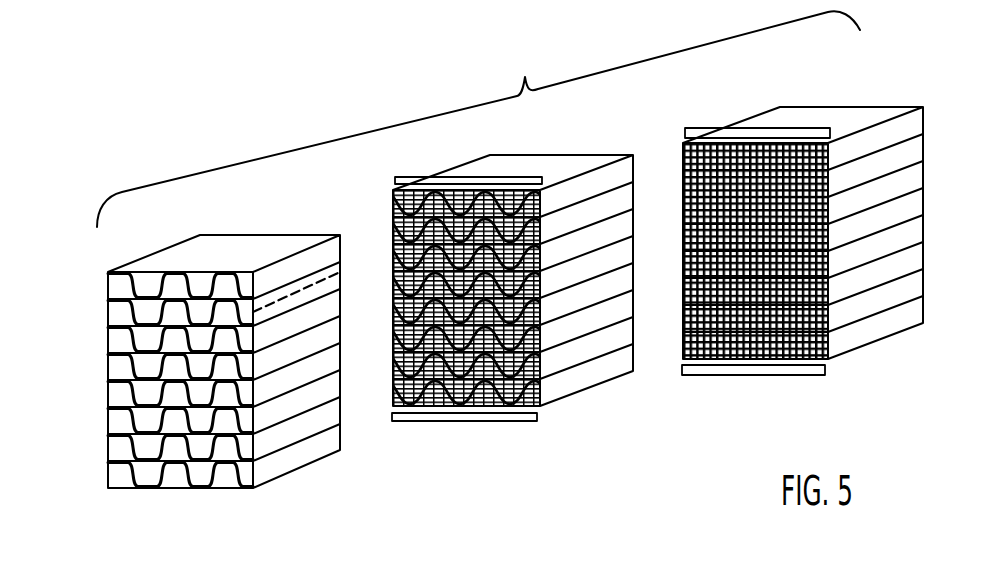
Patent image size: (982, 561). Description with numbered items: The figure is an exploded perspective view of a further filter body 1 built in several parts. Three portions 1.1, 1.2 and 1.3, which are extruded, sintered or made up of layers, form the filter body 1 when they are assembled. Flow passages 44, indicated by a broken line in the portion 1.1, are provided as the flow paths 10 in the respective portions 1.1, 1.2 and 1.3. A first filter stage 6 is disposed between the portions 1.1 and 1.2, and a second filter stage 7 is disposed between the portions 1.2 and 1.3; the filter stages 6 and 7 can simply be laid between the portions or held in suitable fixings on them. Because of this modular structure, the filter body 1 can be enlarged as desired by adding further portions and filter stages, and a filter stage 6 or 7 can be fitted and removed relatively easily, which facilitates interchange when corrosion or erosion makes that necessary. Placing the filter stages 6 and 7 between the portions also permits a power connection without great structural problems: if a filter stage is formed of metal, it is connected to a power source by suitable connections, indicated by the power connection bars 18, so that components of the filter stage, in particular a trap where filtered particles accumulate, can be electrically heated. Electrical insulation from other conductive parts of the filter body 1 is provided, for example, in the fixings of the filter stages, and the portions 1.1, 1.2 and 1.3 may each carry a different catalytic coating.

The filter body 1 is at (478, 119).
The first portion of the filter body 1.1 is at (237, 249).
The second portion of the filter body 1.2 is at (548, 168).
The third portion of the filter body 1.3 is at (817, 117).
The flow passages 44 is at (312, 287).
The flow paths 10 is at (225, 443).
The power connection bars 18 is at (422, 178).
The first filter stage 6 is at (560, 304).
The second filter stage 7 is at (840, 313).